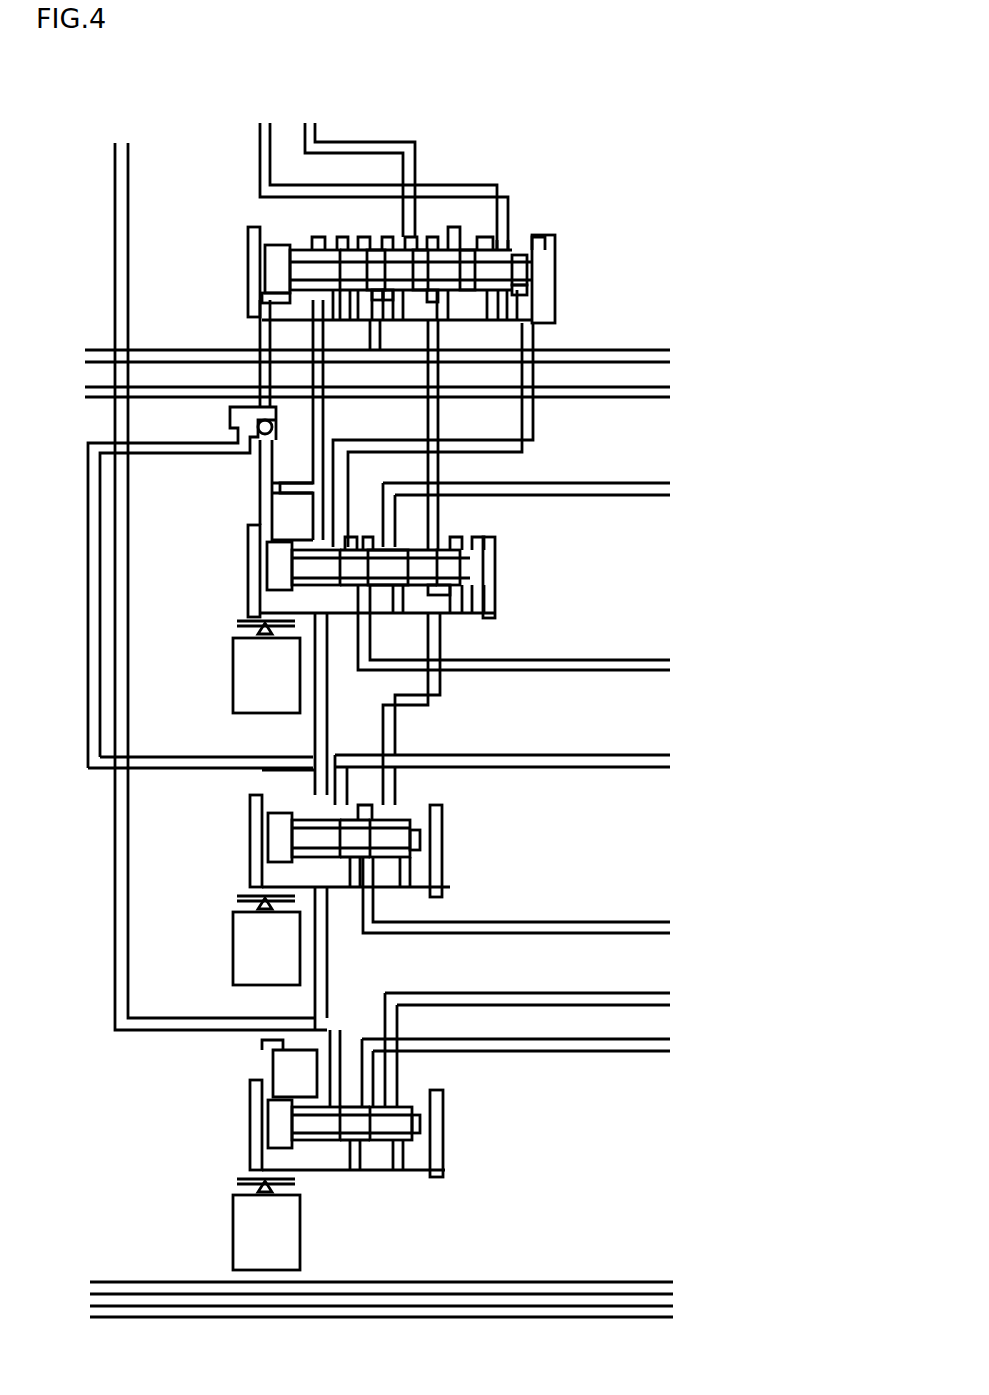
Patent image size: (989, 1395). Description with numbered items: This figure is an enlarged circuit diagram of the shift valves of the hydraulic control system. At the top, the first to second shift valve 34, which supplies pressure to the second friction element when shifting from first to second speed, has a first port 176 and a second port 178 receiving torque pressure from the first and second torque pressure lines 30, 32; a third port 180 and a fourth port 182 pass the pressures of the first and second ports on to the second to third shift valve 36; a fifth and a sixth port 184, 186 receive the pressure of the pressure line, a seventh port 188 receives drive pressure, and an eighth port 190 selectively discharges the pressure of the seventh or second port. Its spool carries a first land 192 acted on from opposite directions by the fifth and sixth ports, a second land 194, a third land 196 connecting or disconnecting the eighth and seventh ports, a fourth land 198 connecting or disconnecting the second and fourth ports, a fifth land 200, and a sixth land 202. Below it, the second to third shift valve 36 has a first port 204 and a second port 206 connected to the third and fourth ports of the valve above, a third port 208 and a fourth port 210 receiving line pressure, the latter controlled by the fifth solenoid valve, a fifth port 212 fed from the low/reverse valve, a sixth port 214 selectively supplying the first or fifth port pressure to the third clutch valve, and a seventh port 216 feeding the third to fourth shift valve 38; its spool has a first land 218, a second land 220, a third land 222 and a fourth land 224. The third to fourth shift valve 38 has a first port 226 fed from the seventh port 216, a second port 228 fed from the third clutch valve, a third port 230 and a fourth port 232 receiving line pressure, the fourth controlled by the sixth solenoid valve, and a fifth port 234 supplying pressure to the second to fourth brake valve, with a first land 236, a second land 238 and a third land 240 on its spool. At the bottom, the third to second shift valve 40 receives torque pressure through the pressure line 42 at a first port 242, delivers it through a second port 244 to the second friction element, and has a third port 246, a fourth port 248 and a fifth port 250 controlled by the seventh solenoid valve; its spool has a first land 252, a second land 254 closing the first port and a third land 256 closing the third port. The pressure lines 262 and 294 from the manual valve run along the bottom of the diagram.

The first torque pressure line 30 is at (258, 143).
The second torque pressure line 32 is at (358, 148).
The first to second shift valve 34 is at (413, 279).
The second to third shift valve 36 is at (379, 593).
The third to fourth shift valve 38 is at (357, 878).
The third to second shift valve 40 is at (356, 1153).
The pressure line 42 is at (157, 1030).
The first port 176 is at (503, 243).
The second port 178 is at (412, 245).
The third port 180 is at (527, 297).
The fourth port 182 is at (433, 297).
The fifth port 184 is at (315, 303).
The sixth port 186 is at (258, 303).
The seventh port 188 is at (363, 300).
The eighth port 190 is at (387, 300).
The first land 192 is at (272, 252).
The second land 194 is at (308, 257).
The third land 196 is at (377, 253).
The fourth land 198 is at (422, 253).
The fifth land 200 is at (468, 258).
The sixth land 202 is at (520, 263).
The first port 204 is at (348, 540).
The second port 206 is at (435, 545).
The third port 208 is at (318, 530).
The fourth port 210 is at (265, 528).
The fifth port 212 is at (392, 543).
The sixth port 214 is at (362, 617).
The seventh port 216 is at (437, 590).
The first land 218 is at (280, 557).
The second land 220 is at (307, 567).
The third land 222 is at (397, 600).
The fourth land 224 is at (445, 568).
The first port 226 is at (395, 797).
The second port 228 is at (347, 797).
The third port 230 is at (318, 795).
The fourth port 232 is at (250, 797).
The fifth port 234 is at (367, 865).
The first land 236 is at (275, 840).
The second land 238 is at (310, 838).
The third land 240 is at (390, 830).
The first port 242 is at (345, 1092).
The second port 244 is at (378, 1092).
The third port 246 is at (398, 1100).
The fourth port 248 is at (320, 1092).
The fifth port 250 is at (265, 1093).
The first land 252 is at (285, 1115).
The second land 254 is at (318, 1125).
The third land 256 is at (393, 1125).
The pressure line 262 is at (122, 1288).
The pressure line 294 is at (580, 1305).